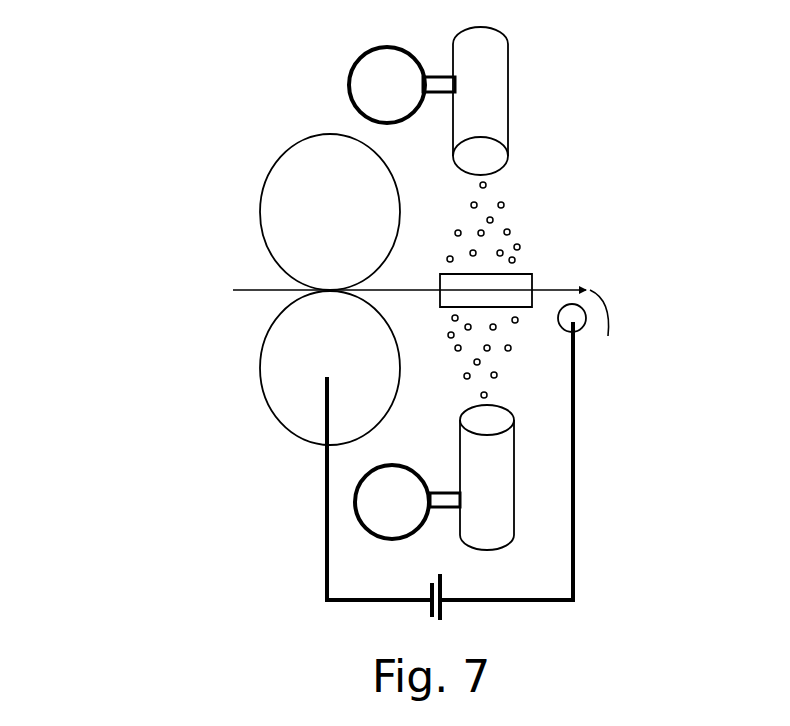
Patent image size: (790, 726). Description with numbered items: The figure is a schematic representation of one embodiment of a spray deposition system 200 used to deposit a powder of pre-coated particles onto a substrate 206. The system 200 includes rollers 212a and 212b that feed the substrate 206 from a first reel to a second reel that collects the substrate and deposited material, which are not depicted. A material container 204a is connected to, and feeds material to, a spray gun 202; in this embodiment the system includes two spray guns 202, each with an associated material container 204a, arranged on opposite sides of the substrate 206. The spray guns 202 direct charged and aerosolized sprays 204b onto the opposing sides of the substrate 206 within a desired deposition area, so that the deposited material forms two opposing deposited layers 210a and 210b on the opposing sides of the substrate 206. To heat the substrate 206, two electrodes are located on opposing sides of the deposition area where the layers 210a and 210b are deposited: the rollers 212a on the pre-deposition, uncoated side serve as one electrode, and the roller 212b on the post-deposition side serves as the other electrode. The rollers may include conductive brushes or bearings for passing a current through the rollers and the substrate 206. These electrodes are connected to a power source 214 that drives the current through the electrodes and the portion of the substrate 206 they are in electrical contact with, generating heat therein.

The deposition system 200 is at (152, 122).
The spray gun 202 is at (487, 115).
The material container 204a is at (404, 293).
The spray of particles 204b is at (512, 356).
The substrate 206 is at (273, 292).
The deposited layer 210a is at (519, 278).
The deposited layer 210b is at (518, 300).
The rollers 212a is at (288, 358).
The rollers 212b is at (581, 328).
The power source 214 is at (450, 487).